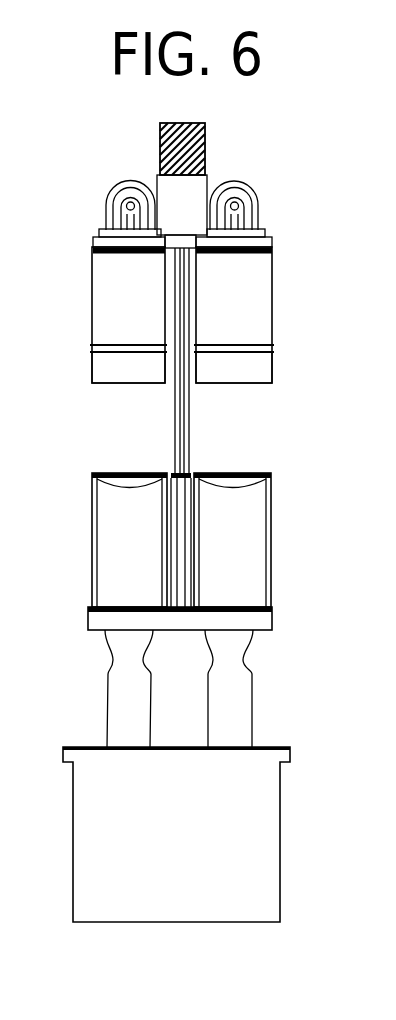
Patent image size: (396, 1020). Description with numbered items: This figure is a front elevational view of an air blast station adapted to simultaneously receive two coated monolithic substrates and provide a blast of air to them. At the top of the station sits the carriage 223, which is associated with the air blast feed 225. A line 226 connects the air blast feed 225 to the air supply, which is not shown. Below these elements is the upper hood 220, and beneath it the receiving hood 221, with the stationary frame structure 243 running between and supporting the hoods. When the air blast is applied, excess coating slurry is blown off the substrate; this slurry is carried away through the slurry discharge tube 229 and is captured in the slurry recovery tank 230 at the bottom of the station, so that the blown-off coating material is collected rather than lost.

The carriage 223 is at (205, 150).
The line 226 is at (256, 198).
The air blast feed 225 is at (272, 295).
The upper hood 220 is at (272, 362).
The stationary frame structure 243 is at (189, 431).
The receiving hood 221 is at (271, 540).
The slurry discharge tube 229 is at (254, 632).
The slurry recovery tank 230 is at (280, 822).